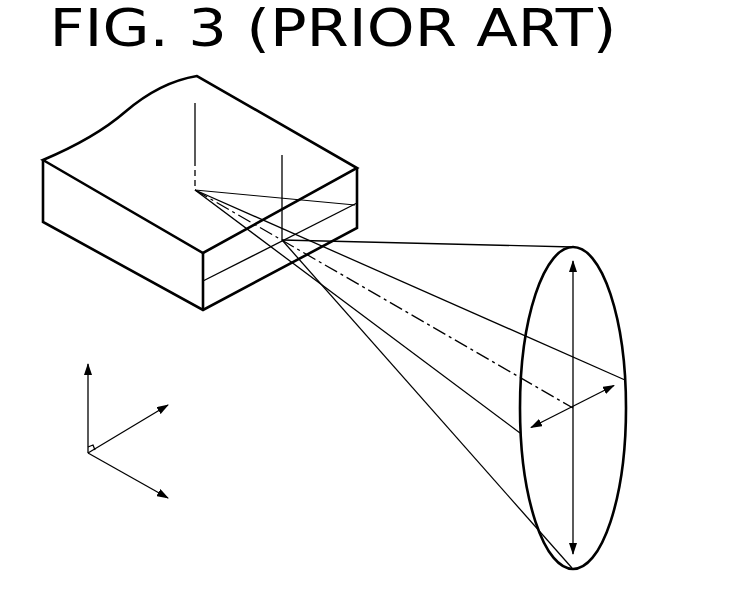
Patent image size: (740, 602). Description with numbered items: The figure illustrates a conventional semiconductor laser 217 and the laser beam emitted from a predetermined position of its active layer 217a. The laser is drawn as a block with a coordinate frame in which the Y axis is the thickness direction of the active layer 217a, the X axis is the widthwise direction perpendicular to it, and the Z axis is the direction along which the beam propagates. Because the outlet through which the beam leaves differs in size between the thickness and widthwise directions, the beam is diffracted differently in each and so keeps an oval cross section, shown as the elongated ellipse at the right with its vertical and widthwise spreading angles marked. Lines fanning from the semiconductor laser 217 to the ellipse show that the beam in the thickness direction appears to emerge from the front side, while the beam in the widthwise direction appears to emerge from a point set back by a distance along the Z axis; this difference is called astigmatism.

The semiconductor laser 217 is at (376, 144).
The active layer 217a is at (360, 204).
The X-axis X is at (142, 420).
The Y-axis Y is at (86, 387).
The Z-axis Z is at (144, 488).